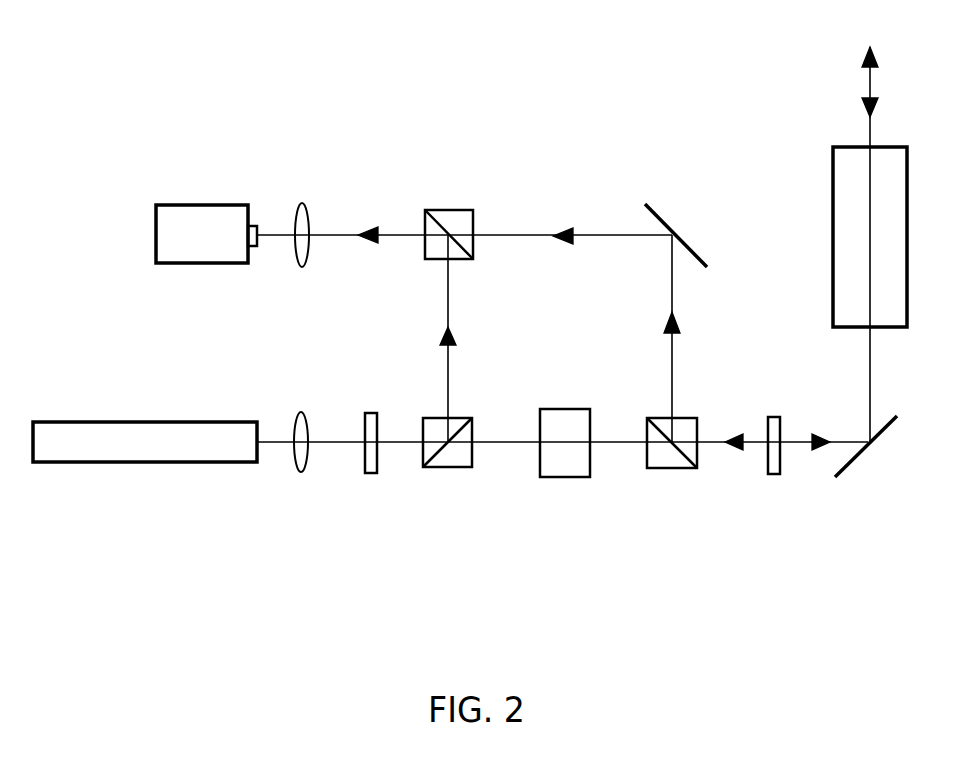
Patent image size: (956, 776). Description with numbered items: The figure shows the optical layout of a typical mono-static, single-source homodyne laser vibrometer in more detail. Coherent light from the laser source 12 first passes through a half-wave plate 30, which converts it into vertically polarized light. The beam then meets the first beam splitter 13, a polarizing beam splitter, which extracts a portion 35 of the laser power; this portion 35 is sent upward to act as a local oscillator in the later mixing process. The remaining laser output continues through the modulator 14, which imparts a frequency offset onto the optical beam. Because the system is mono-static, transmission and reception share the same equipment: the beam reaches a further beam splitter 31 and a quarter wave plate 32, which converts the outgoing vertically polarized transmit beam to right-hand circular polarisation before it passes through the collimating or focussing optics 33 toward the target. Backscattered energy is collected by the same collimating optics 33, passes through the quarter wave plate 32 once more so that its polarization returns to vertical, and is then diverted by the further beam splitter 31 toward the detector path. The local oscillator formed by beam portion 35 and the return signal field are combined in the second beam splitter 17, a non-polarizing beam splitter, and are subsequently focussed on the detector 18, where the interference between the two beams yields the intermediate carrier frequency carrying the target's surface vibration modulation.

The laser source 12 is at (160, 462).
The first beam splitter 13 is at (450, 467).
The modulator 14 is at (568, 477).
The second beam splitter 17 is at (447, 210).
The detector 18 is at (220, 205).
The half-wave plate 30 is at (364, 455).
The further beam splitter 31 is at (677, 468).
The quarter wave plate 32 is at (772, 474).
The collimating or focussing optics 33 is at (833, 263).
The portion of the laser power 35 is at (440, 340).